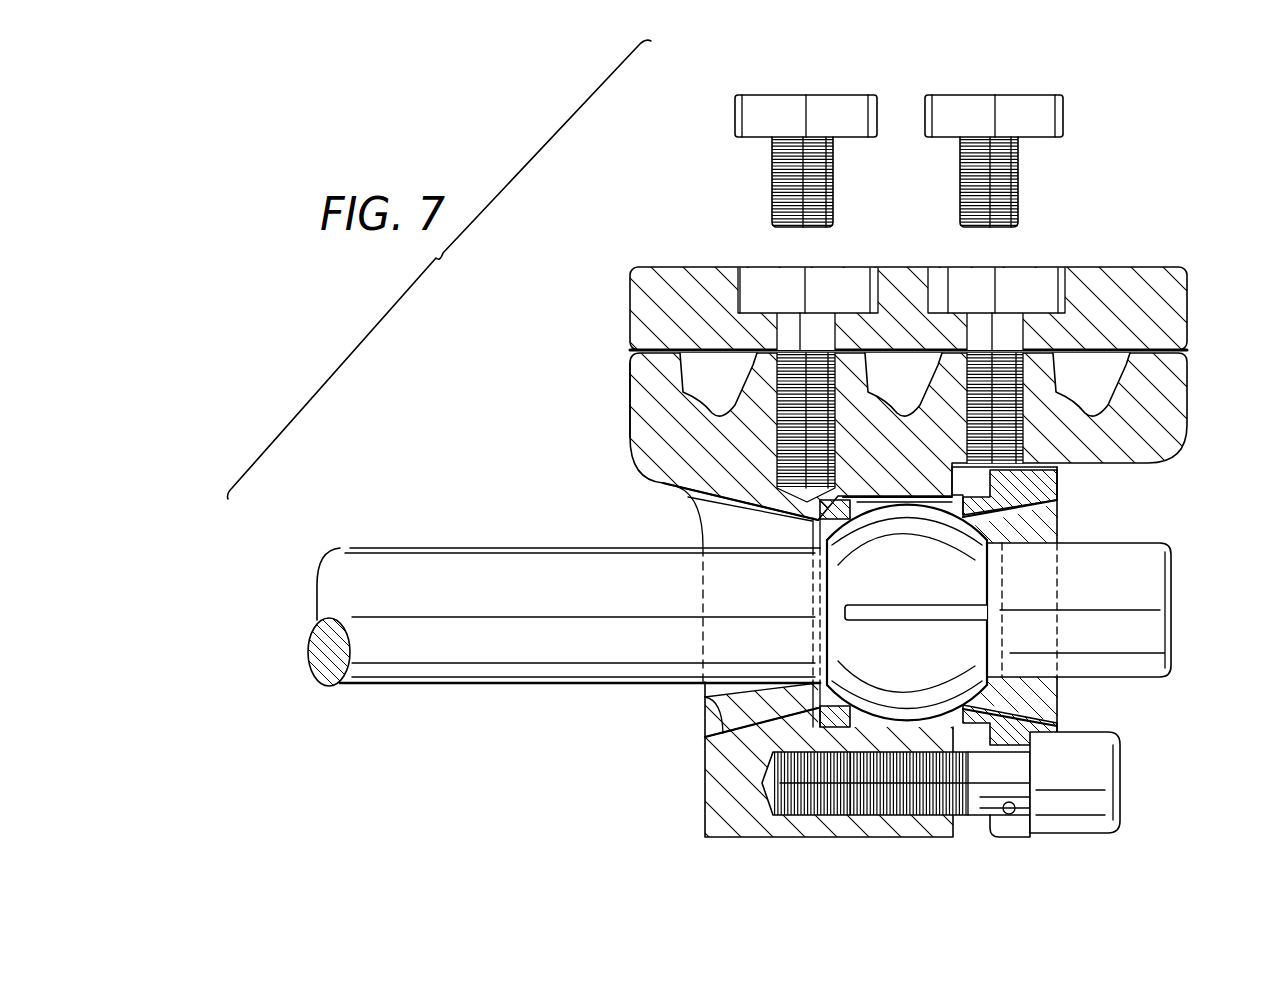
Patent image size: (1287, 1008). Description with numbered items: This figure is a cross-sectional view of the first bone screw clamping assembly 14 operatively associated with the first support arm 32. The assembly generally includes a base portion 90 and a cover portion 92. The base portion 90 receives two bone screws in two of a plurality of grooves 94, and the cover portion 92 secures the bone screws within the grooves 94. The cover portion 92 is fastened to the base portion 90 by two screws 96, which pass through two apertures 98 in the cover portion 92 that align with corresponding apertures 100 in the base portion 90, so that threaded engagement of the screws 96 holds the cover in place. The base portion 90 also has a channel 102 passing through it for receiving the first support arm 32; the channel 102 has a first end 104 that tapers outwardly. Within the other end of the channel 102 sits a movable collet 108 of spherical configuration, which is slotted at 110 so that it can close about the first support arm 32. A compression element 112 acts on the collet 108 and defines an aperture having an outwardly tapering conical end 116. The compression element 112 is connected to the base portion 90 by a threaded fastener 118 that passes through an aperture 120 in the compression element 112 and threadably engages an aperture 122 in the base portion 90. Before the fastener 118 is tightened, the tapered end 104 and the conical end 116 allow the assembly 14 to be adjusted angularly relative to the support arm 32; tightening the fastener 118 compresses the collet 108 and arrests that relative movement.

The first bone screw clamping assembly 14 is at (1173, 247).
The first support arm 32 is at (438, 546).
The base portion 90 is at (630, 407).
The cover portion 92 is at (665, 268).
The grooves 94 is at (1135, 365).
The screws 96 is at (850, 103).
The apertures 98 is at (782, 336).
The apertures 100 is at (907, 390).
The channel 102 is at (1003, 529).
The first end 104 is at (705, 697).
The collet 108 is at (1005, 656).
The slot 110 is at (997, 612).
The compression element 112 is at (1065, 727).
The outwardly tapering conical end 116 is at (1040, 512).
The threaded fastener 118 is at (1124, 836).
The aperture 120 is at (1010, 815).
The aperture 122 is at (932, 805).